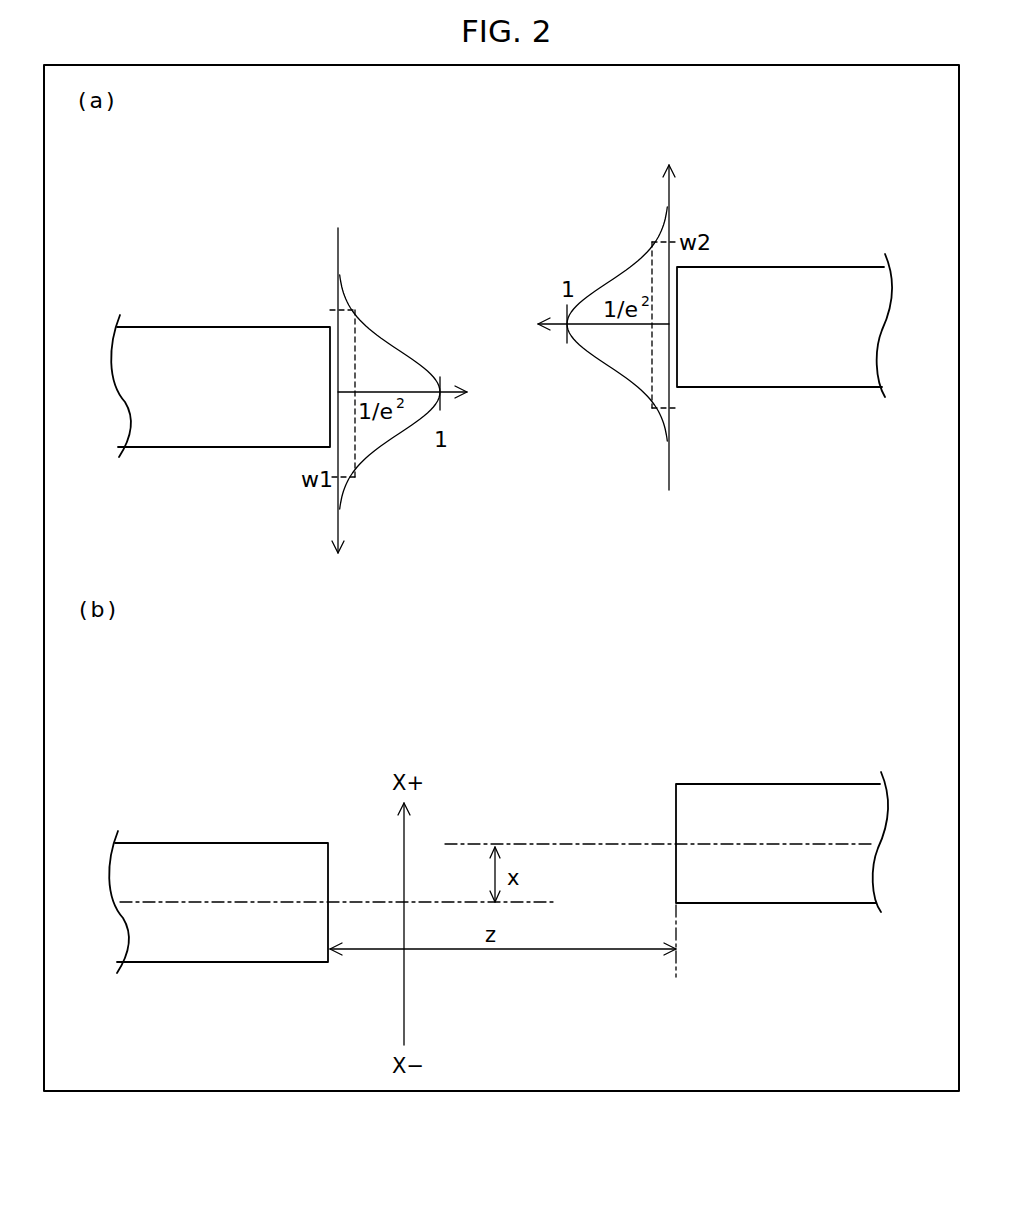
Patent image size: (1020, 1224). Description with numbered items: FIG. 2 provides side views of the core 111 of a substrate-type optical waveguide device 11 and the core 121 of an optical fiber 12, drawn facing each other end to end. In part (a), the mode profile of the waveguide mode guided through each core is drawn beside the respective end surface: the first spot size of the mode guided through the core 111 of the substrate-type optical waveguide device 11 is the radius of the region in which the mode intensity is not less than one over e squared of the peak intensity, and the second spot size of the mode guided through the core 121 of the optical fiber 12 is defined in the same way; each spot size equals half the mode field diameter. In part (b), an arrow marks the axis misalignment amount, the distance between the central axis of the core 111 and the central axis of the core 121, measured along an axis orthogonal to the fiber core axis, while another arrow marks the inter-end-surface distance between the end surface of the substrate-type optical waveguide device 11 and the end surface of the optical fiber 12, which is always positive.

The substrate-type optical waveguide device 11 is at (185, 242).
The core of the substrate-type optical waveguide device 111 is at (217, 327).
The optical fiber 12 is at (750, 193).
The core of the optical fiber 121 is at (787, 267).